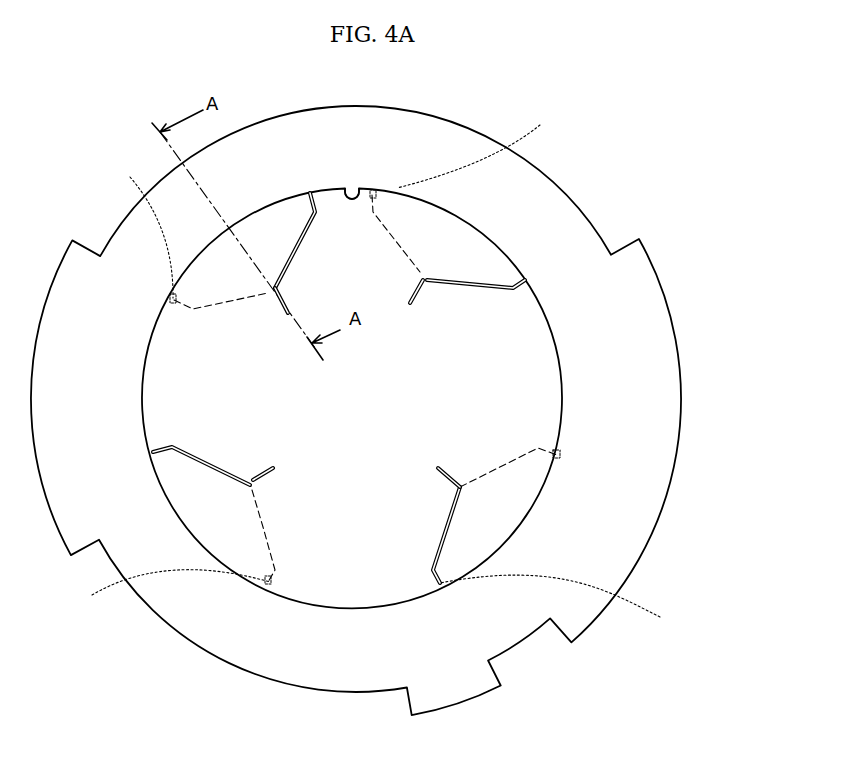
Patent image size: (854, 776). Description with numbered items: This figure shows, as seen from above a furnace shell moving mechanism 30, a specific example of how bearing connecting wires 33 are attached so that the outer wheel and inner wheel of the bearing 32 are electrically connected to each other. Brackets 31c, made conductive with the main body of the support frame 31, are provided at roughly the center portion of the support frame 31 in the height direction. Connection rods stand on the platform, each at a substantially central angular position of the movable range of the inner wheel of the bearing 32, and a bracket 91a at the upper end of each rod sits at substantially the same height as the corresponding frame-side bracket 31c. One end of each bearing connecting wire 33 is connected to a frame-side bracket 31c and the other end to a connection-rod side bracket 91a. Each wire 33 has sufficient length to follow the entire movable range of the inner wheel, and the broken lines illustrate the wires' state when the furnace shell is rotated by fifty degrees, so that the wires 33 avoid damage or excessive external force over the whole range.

The retaining ring assembly 30 is at (634, 160).
The support frame 31 is at (410, 138).
The bracket 31c is at (310, 195).
The bearing 32 is at (362, 188).
The bearing connecting wire 33 is at (212, 305).
The bracket 91a is at (282, 308).